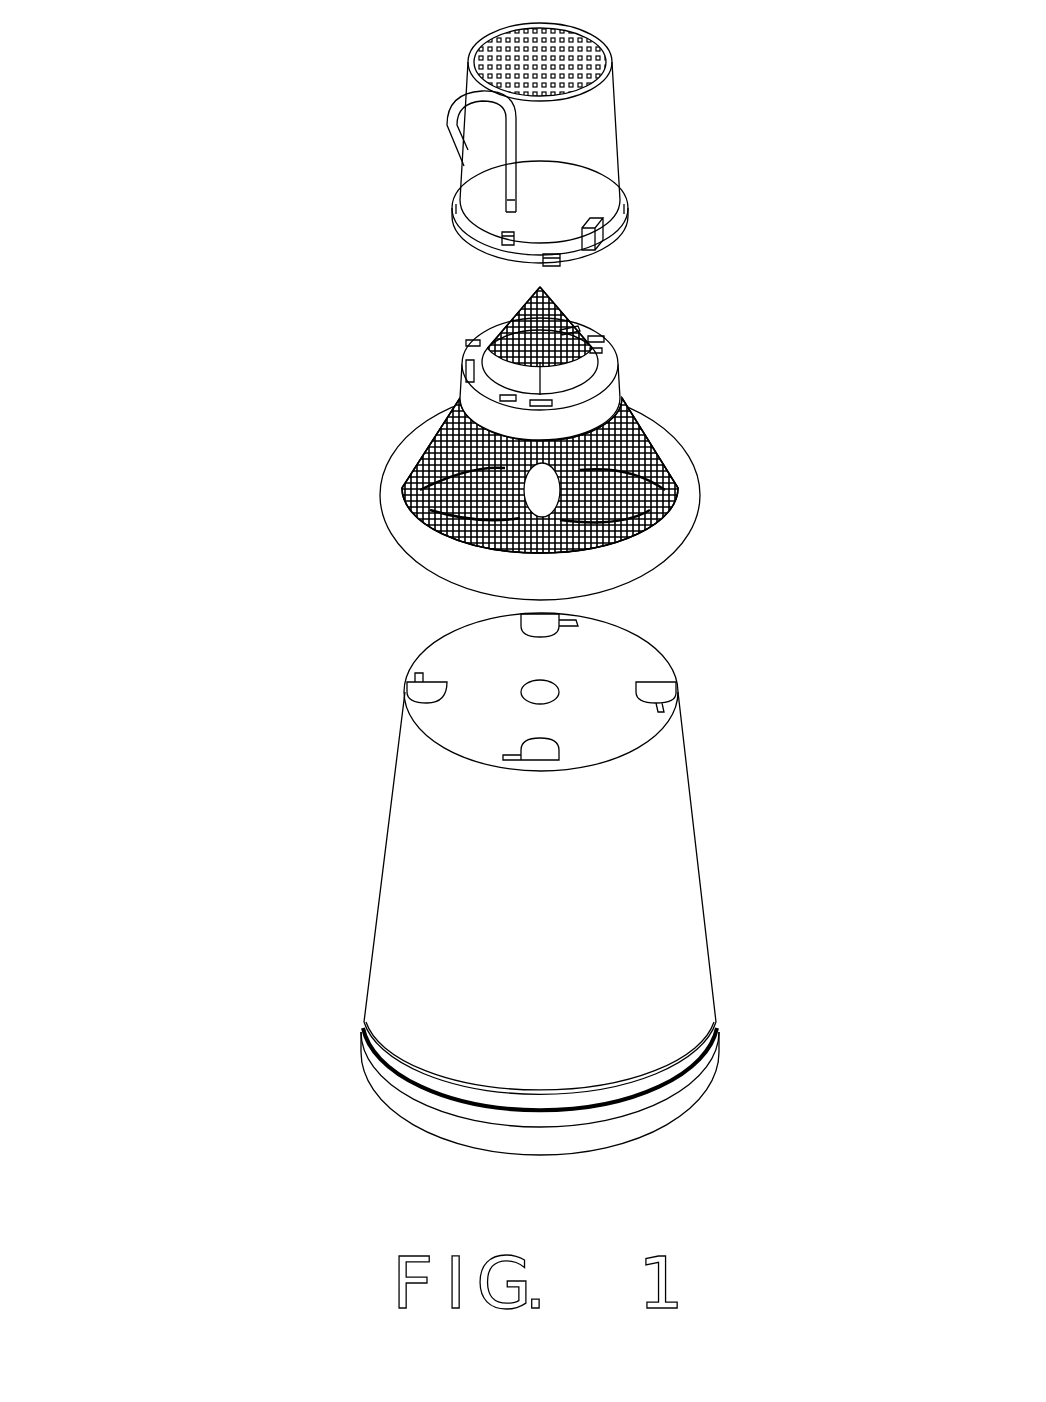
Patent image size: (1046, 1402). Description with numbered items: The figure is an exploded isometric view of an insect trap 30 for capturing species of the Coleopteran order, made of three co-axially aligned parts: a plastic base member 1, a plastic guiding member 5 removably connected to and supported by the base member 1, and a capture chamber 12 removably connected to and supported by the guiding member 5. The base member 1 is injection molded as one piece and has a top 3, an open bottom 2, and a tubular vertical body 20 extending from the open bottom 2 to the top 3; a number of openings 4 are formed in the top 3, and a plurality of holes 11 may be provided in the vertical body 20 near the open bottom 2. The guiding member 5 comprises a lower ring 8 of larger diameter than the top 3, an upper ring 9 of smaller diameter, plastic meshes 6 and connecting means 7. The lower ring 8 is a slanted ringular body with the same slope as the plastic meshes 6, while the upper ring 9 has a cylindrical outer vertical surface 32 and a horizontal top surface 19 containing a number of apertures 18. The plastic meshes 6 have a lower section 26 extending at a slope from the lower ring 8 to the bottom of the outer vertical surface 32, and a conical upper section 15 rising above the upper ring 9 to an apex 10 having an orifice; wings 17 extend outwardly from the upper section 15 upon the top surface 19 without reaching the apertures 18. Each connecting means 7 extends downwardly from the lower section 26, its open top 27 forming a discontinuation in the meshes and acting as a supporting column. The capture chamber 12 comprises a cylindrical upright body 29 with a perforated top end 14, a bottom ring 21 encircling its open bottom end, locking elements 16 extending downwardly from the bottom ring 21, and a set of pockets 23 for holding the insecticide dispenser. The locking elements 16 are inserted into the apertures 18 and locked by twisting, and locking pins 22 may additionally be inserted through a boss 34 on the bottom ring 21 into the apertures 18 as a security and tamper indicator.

The base member 1 is at (293, 893).
The open bottom 2 is at (378, 1105).
The top 3 is at (592, 652).
The openings 4 is at (655, 697).
The guiding member 5 is at (375, 472).
The plastic meshes 6 is at (680, 468).
The connecting means 7 is at (665, 512).
The lower ring 8 is at (612, 570).
The upper ring 9 is at (598, 407).
The apex 10 is at (537, 292).
The holes 11 is at (690, 1058).
The capture chamber 12 is at (680, 135).
The perforated top end 14 is at (475, 57).
The upper section 15 is at (575, 325).
The locking elements 16 is at (556, 262).
The wings 17 is at (612, 354).
The apertures 18 is at (462, 372).
The top surface 19 is at (236, 430).
The vertical body 20 is at (570, 930).
The bottom ring 21 is at (458, 212).
The locking pins 22 is at (450, 118).
The pockets 23 is at (600, 238).
The lower section 26 is at (422, 520).
The open top 27 is at (403, 492).
The cylindrical upright body 29 is at (585, 140).
The insect trap 30 is at (300, 740).
The outer vertical surface 32 is at (610, 393).
The boss 34 is at (472, 240).